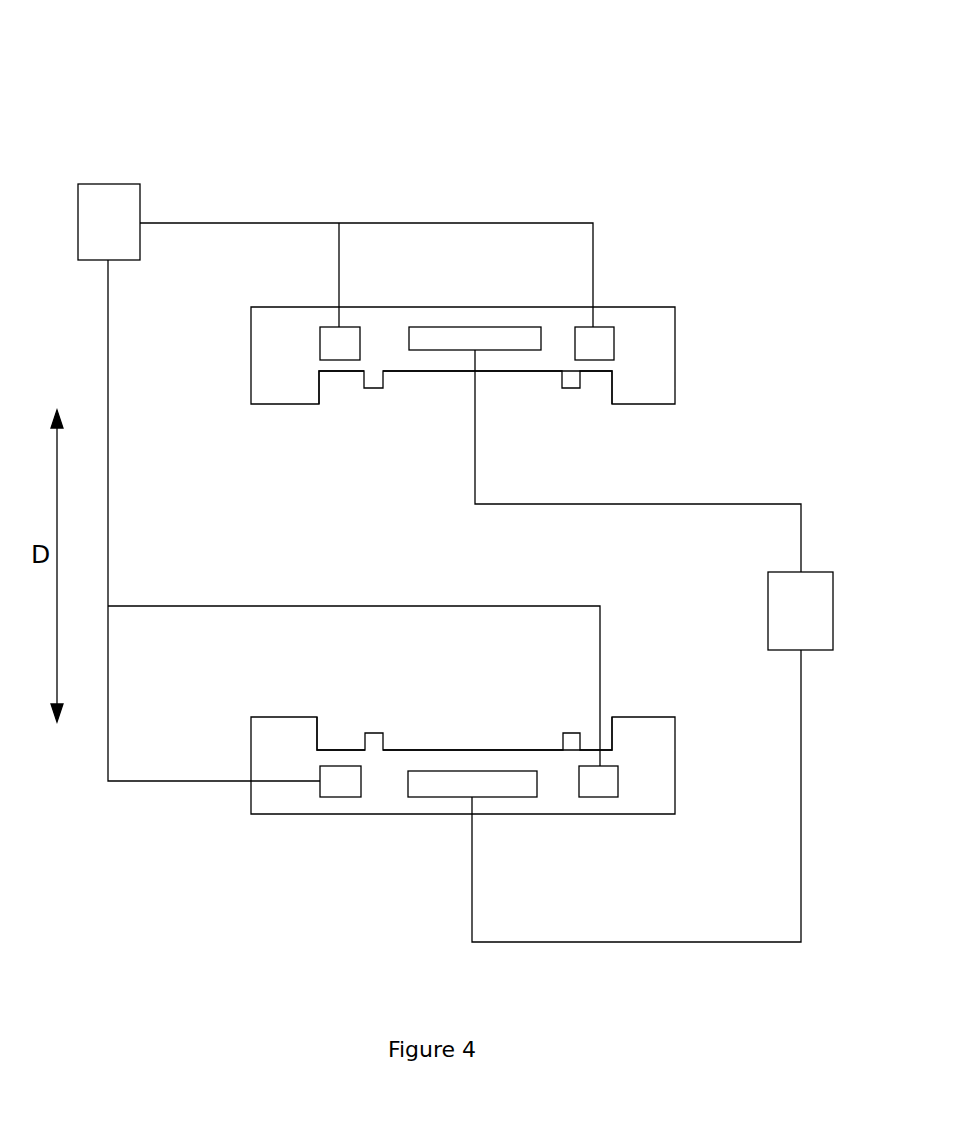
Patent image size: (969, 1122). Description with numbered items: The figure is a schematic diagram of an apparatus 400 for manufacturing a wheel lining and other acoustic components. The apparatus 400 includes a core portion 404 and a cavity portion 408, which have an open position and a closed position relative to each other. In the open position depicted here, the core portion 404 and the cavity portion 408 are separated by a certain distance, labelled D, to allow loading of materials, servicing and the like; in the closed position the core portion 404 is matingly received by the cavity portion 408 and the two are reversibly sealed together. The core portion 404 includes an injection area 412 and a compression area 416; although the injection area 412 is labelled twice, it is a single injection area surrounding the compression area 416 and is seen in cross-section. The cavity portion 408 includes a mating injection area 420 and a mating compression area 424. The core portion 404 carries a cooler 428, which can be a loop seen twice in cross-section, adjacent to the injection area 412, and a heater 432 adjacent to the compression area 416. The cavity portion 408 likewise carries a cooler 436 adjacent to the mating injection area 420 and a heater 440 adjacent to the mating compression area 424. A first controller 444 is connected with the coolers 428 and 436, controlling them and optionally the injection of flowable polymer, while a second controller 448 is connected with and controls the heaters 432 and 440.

The apparatus 400 is at (135, 90).
The core portion 404 is at (698, 336).
The cavity portion 408 is at (283, 836).
The injection area 412 is at (341, 388).
The compression area 416 is at (443, 387).
The mating injection area 420 is at (350, 740).
The mating compression area 424 is at (470, 742).
The cooler 428 is at (320, 327).
The heater 432 is at (482, 323).
The cooler 436 is at (343, 797).
The heater 440 is at (432, 797).
The first controller 444 is at (109, 222).
The second controller 448 is at (800, 611).